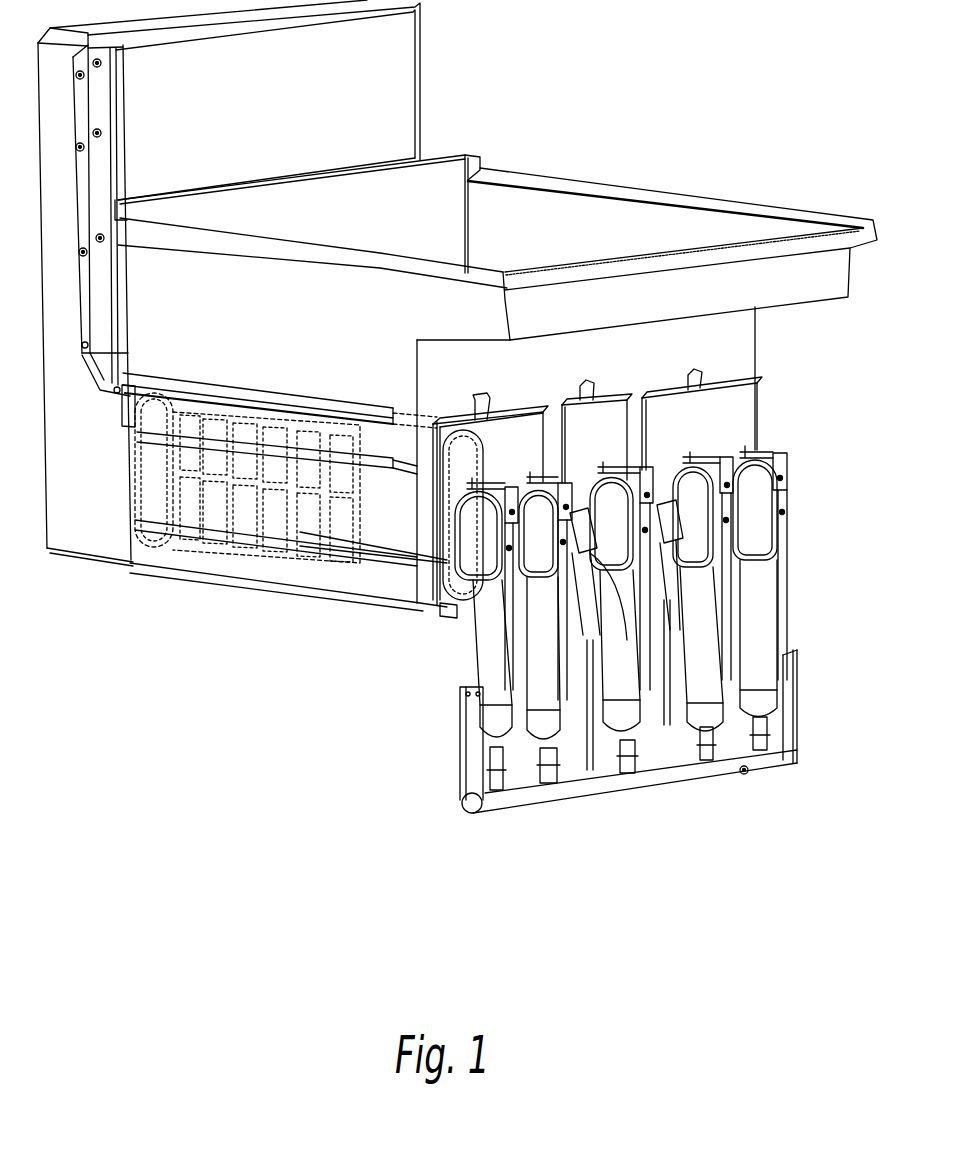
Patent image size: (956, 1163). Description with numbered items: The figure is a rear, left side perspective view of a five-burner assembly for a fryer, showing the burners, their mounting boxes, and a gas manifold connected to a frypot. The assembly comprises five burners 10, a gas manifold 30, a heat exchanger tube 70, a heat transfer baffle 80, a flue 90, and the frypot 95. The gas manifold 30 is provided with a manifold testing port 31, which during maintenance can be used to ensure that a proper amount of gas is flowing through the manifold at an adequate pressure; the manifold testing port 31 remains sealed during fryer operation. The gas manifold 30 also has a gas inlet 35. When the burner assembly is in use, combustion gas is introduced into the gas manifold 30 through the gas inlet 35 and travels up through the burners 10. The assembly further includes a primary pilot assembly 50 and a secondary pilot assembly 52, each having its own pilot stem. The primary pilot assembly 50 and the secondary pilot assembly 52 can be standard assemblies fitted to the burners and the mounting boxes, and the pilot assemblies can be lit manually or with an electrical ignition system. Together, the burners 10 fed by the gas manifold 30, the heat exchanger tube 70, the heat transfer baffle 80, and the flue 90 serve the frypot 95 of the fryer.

The burners 10 is at (785, 549).
The gas manifold 30 is at (523, 813).
The manifold testing port 31 is at (749, 771).
The gas inlet 35 is at (657, 765).
The primary pilot assembly 50 is at (688, 452).
The secondary pilot assembly 52 is at (627, 773).
The heat exchanger tube 70 is at (250, 560).
The heat transfer baffle 80 is at (167, 550).
The flue 90 is at (62, 551).
The frypot 95 is at (614, 183).